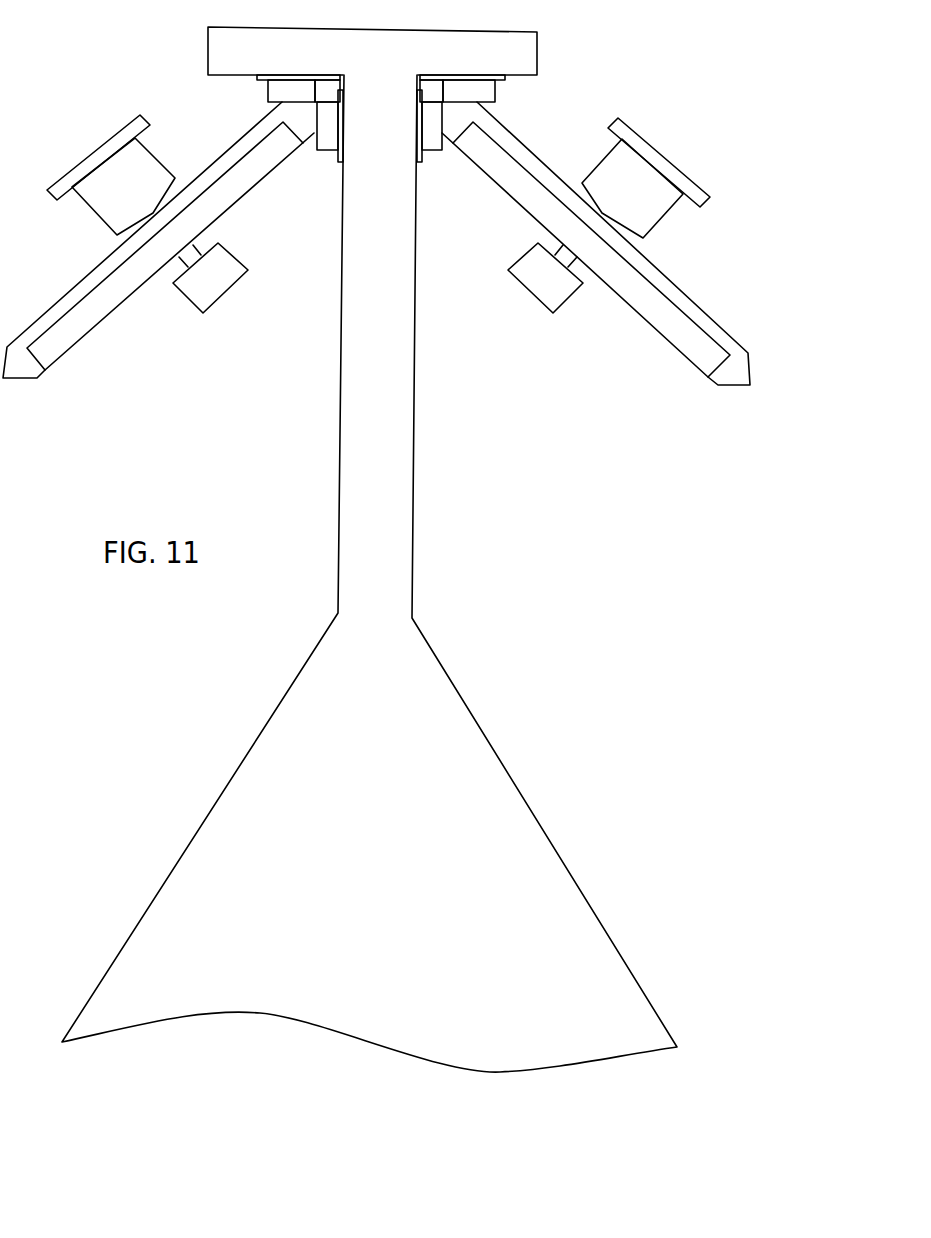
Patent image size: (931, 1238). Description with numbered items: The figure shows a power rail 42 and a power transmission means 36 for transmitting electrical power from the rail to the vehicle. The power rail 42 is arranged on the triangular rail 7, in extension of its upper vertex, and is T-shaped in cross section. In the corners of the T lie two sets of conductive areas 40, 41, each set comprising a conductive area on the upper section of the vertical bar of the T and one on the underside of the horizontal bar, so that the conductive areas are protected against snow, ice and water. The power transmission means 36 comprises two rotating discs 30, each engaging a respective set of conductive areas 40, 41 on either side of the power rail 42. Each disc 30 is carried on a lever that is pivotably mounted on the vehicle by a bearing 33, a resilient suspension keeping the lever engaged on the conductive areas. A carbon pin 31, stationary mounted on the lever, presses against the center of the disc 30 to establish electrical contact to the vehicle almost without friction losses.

The triangular rail 7 is at (380, 885).
The rotating disc 30 is at (750, 368).
The pin 31 is at (665, 218).
The bearing 33 is at (562, 305).
The power transmission means 36 is at (652, 394).
The conductive area 40 is at (497, 92).
The conductive area 41 is at (268, 90).
The power rail 42 is at (390, 77).